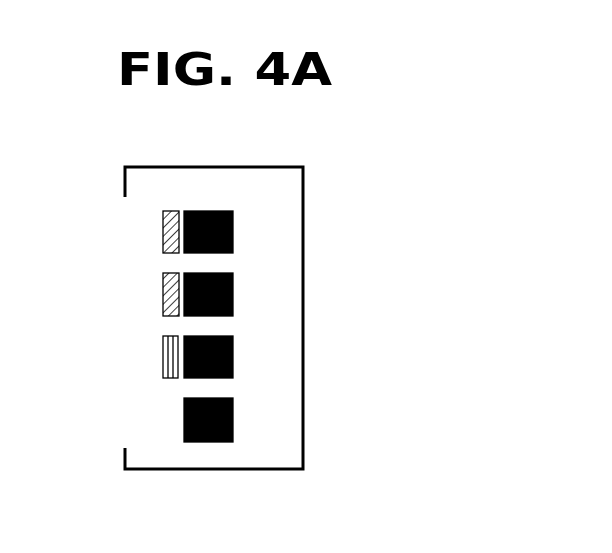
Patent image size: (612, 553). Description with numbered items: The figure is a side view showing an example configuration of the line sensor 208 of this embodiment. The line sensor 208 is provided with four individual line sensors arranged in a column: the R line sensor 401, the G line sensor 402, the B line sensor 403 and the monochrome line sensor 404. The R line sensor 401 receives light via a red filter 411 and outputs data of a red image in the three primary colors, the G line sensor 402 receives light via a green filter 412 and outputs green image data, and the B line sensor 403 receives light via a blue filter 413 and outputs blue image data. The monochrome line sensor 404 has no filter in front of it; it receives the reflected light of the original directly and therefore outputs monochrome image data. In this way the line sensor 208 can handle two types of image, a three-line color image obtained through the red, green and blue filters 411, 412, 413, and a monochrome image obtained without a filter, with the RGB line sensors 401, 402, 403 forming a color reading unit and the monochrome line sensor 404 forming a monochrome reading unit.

The line sensor 208 is at (313, 195).
The R line sensor 401 is at (236, 222).
The G line sensor 402 is at (236, 284).
The B line sensor 403 is at (236, 347).
The monochrome line sensor 404 is at (236, 409).
The red filter 411 is at (158, 222).
The green filter 412 is at (158, 284).
The blue filter 413 is at (158, 347).